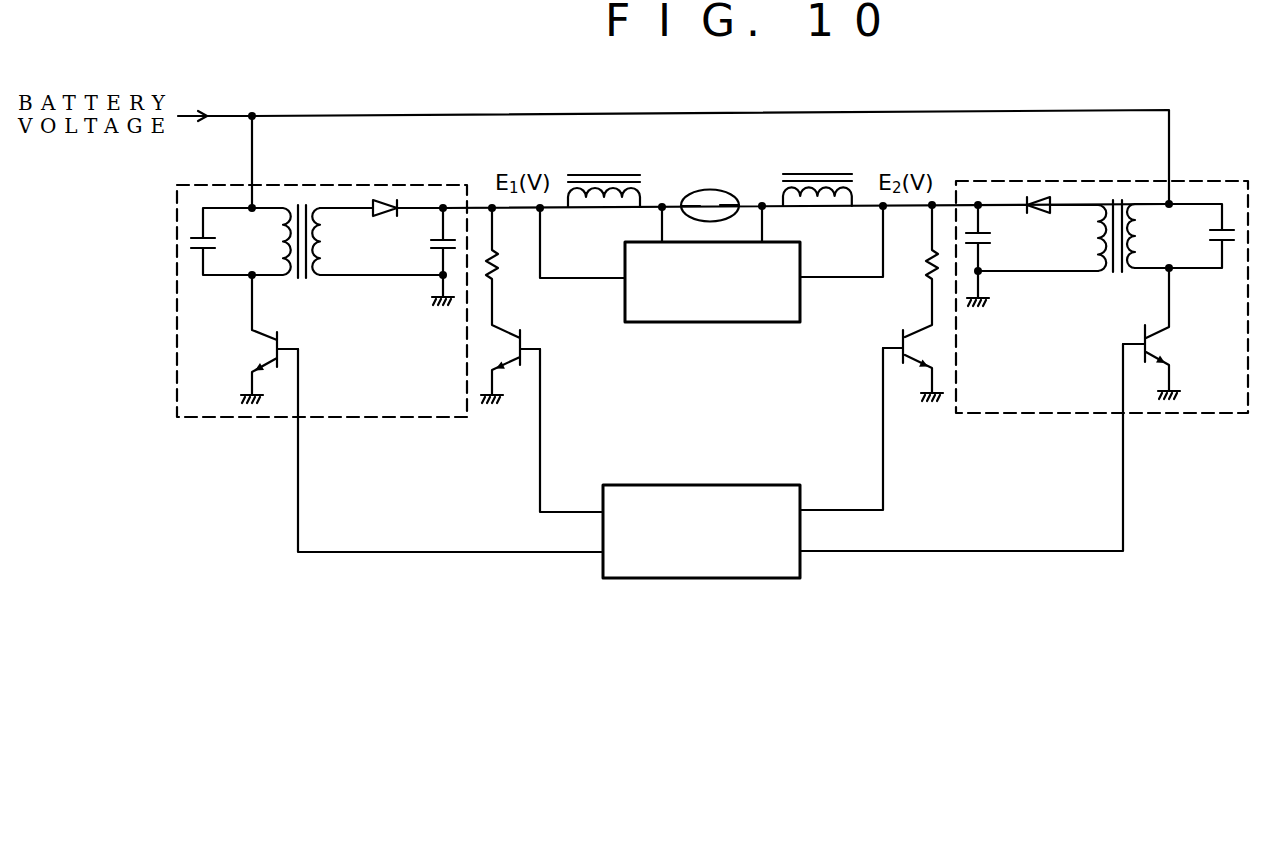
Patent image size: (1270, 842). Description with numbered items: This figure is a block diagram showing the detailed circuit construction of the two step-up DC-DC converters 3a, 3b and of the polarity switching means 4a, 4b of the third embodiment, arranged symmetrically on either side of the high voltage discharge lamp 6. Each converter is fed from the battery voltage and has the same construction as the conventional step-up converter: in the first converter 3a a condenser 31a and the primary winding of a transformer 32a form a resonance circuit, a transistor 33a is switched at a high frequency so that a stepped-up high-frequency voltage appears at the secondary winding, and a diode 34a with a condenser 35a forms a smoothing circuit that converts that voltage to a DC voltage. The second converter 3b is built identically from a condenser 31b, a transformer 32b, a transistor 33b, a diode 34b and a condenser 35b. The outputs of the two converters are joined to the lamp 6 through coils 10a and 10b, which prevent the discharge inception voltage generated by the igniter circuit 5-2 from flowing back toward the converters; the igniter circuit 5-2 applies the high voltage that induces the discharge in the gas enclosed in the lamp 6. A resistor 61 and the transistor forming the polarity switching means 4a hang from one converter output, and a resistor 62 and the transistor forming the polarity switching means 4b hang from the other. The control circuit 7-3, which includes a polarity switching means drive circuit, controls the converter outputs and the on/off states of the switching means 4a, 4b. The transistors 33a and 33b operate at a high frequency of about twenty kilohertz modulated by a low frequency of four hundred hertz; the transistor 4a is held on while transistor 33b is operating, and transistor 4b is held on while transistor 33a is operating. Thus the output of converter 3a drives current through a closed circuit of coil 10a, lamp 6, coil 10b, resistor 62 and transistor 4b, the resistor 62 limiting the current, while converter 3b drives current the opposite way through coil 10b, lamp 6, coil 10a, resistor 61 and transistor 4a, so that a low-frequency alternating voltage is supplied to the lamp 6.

The step-up DC-DC converter 3a is at (283, 183).
The step-up DC-DC converter 3b is at (1018, 179).
The condenser 31a is at (216, 243).
The condenser 31b is at (1207, 228).
The transformer 32a is at (303, 281).
The transformer 32b is at (1114, 275).
The transistor 33a is at (267, 352).
The transistor 33b is at (1163, 343).
The diode 34a is at (387, 220).
The diode 34b is at (1041, 214).
The condenser 35a is at (431, 243).
The condenser 35b is at (993, 238).
The coil 10a is at (613, 169).
The coil 10b is at (823, 168).
The high voltage discharge lamp 6 is at (712, 189).
The resistor 61 is at (503, 268).
The resistor 62 is at (925, 262).
The polarity switching means 4a is at (533, 340).
The polarity switching means 4b is at (898, 336).
The igniter circuit 5-2 is at (718, 323).
The control circuit 7-3 is at (723, 485).